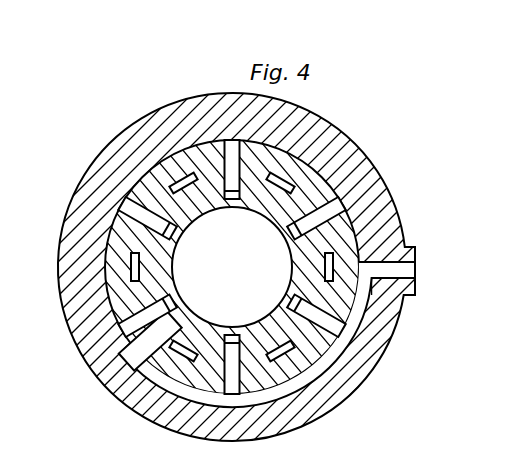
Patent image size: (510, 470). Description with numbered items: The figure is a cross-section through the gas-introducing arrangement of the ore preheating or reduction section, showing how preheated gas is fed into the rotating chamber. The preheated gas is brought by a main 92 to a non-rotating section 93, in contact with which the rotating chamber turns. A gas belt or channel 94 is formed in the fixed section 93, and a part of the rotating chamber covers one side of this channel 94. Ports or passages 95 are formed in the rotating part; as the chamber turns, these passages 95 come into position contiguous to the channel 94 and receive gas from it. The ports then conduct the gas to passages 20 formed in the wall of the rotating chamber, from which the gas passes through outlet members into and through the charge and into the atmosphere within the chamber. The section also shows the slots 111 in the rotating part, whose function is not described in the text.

The passages 20 is at (294, 237).
The main 92 is at (386, 272).
The non-rotating section 93 is at (82, 267).
The gas belt or channel 94 is at (283, 393).
The ports or passages 95 is at (128, 206).
The slots 111 is at (320, 150).